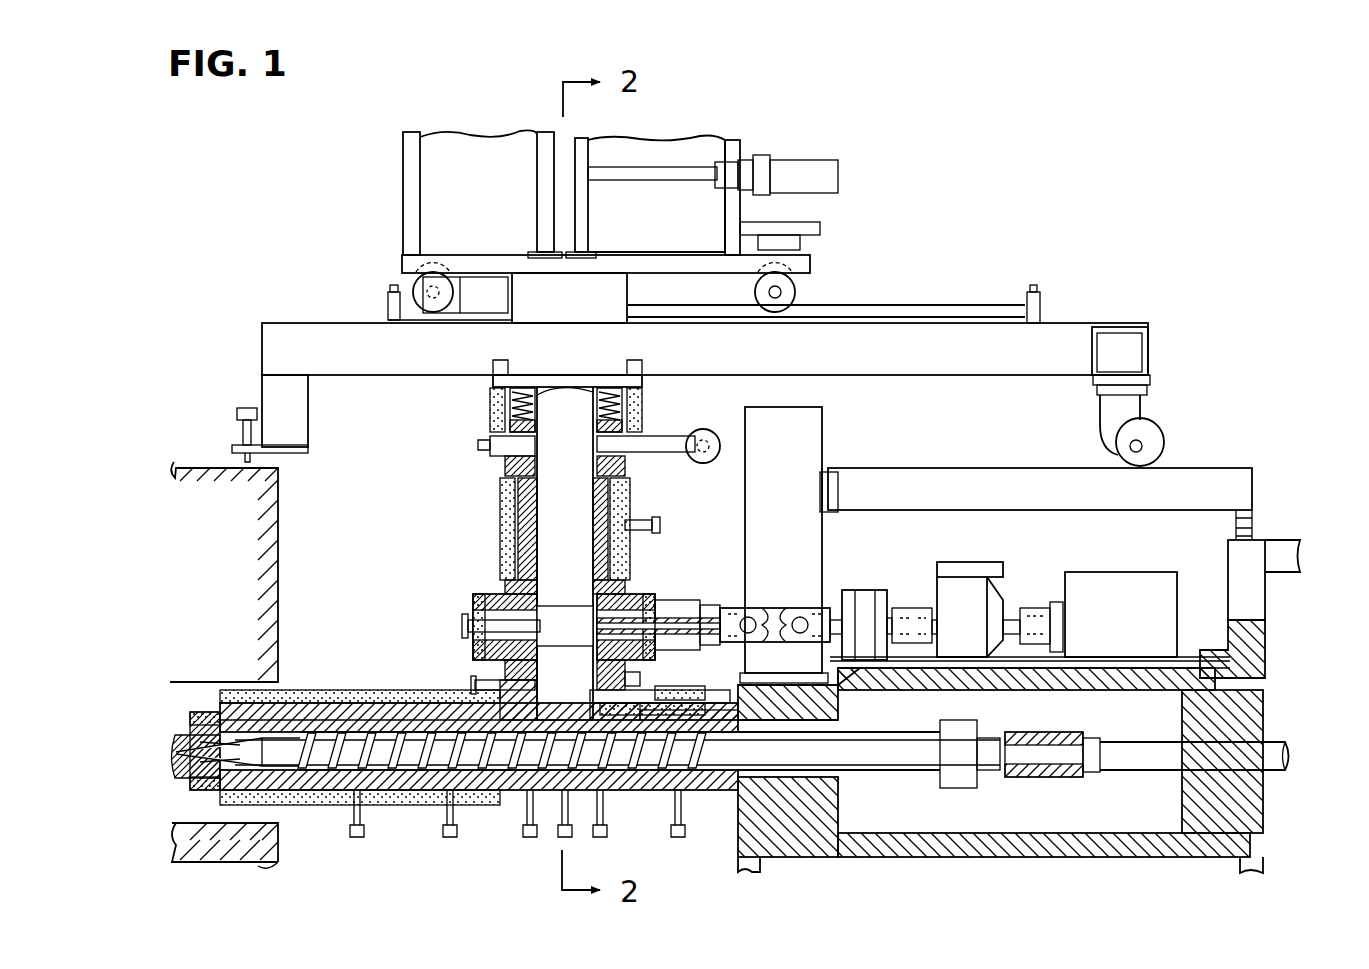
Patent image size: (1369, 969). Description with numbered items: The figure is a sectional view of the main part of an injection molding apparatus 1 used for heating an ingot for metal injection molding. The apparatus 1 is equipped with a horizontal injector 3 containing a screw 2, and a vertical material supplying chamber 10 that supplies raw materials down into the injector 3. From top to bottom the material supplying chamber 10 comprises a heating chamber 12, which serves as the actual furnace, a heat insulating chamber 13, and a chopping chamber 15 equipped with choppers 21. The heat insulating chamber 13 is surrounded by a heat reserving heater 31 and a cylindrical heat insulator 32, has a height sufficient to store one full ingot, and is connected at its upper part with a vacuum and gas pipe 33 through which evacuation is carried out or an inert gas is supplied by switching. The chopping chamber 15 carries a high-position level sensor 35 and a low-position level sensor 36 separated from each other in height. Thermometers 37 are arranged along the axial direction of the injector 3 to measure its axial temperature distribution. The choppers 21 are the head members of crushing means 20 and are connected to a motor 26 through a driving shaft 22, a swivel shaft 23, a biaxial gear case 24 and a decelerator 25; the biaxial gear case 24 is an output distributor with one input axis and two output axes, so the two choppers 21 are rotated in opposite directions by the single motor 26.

The injection molding apparatus 1 is at (1042, 172).
The screw 2 is at (394, 782).
The injector 3 is at (350, 690).
The material supplying chamber 10 is at (352, 443).
The heating chamber 12 is at (400, 242).
The heat insulating chamber 13 is at (500, 490).
The chopping chamber 15 is at (550, 715).
The crushing means 20 is at (940, 418).
The choppers 21 is at (542, 547).
The driving shaft 22 is at (665, 605).
The swivel shaft 23 is at (778, 610).
The biaxial gear case 24 is at (862, 590).
The decelerator 25 is at (965, 562).
The motor 26 is at (1115, 572).
The heat reserving heater 31 is at (633, 484).
The cylindrical heat insulator 32 is at (633, 506).
The vacuum and gas pipe 33 is at (684, 438).
The high-position level sensor 35 is at (473, 683).
The low-position level sensor 36 is at (648, 690).
The thermometers 37 is at (605, 832).